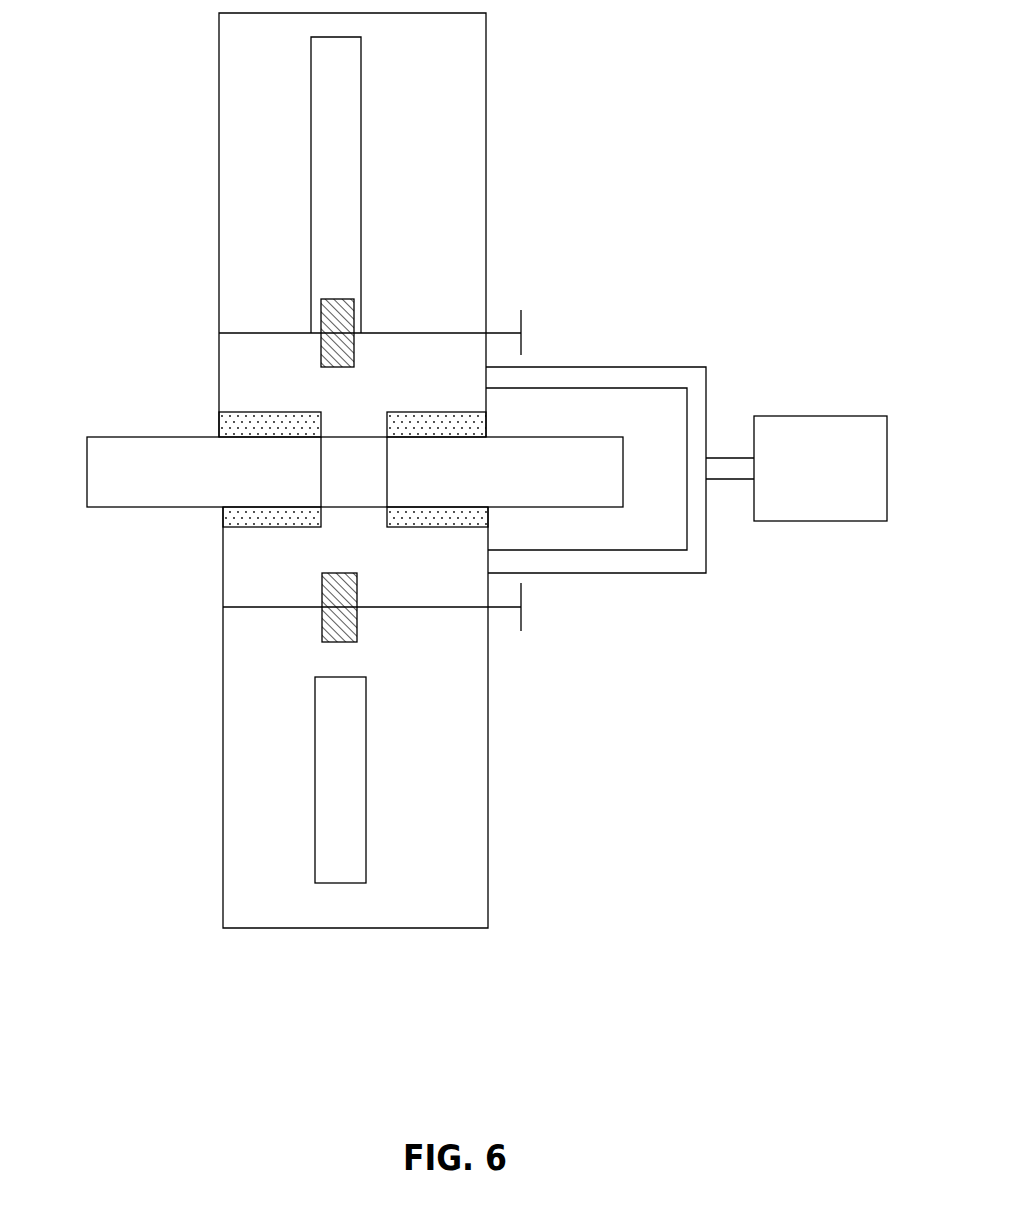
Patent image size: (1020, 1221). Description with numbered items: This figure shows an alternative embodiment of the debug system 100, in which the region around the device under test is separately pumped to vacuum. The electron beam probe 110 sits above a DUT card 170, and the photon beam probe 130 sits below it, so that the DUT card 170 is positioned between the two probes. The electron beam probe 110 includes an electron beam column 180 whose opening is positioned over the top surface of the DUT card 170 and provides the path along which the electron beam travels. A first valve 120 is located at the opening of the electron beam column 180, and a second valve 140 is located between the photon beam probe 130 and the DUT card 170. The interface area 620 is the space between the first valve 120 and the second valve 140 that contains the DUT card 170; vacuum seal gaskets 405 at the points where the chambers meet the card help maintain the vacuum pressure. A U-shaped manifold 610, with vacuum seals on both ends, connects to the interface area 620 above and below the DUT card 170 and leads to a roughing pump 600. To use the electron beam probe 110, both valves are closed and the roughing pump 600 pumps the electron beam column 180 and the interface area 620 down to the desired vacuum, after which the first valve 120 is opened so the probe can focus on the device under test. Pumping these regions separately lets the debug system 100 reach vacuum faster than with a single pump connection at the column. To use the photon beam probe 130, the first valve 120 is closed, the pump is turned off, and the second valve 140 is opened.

The debug system 100 is at (146, 951).
The electron beam probe 110 is at (486, 103).
The first valve 120 is at (399, 332).
The photon beam probe 130 is at (366, 758).
The second valve 140 is at (401, 607).
The DUT card 170 is at (80, 437).
The electron beam column 180 is at (361, 140).
The vacuum seal gaskets 405 is at (213, 518).
The roughing pump 600 is at (803, 521).
The manifold 610 is at (658, 367).
The interface area 620 is at (214, 413).